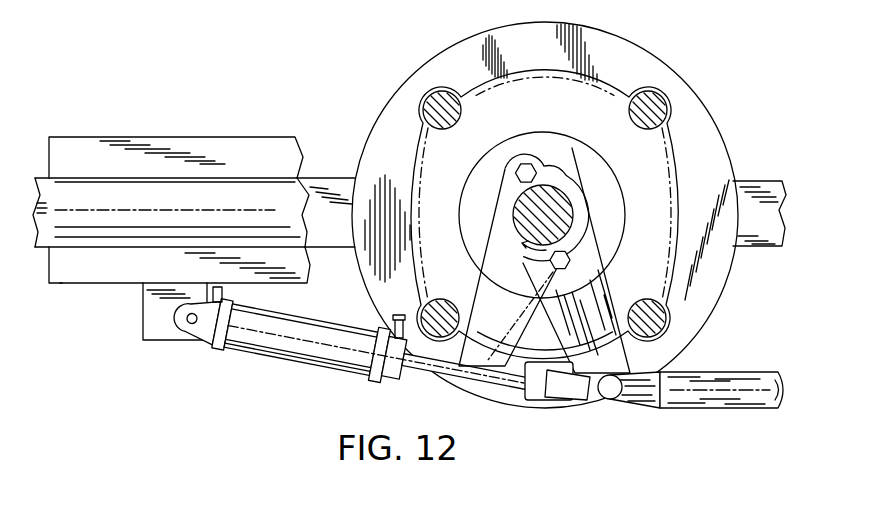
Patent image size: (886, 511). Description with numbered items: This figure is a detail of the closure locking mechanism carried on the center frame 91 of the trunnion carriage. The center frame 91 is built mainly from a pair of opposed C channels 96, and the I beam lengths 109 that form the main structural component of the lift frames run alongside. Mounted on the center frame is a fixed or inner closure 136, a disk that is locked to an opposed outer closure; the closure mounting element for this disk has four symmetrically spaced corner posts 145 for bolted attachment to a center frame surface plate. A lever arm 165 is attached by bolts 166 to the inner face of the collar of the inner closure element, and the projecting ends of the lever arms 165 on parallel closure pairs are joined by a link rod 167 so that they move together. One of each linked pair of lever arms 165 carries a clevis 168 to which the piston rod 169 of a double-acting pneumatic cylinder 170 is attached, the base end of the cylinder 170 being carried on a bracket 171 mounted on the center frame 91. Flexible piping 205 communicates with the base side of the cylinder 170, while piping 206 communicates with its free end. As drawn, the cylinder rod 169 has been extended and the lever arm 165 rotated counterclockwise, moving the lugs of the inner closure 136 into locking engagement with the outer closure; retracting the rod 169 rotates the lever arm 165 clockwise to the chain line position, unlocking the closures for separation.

The inner closure 136 is at (636, 60).
The corner posts 145 is at (427, 98).
The lever arm 165 is at (660, 356).
The bolts 166 is at (530, 167).
The I beam lengths 109 is at (327, 187).
The C channels 96 is at (252, 143).
The center frame 91 is at (86, 287).
The bracket 171 is at (157, 345).
The double-acting pneumatic cylinder 170 is at (334, 368).
The piping 205 is at (222, 294).
The piping 206 is at (398, 316).
The piston rod 169 is at (518, 380).
The clevis 168 is at (568, 392).
The link rod 167 is at (755, 404).